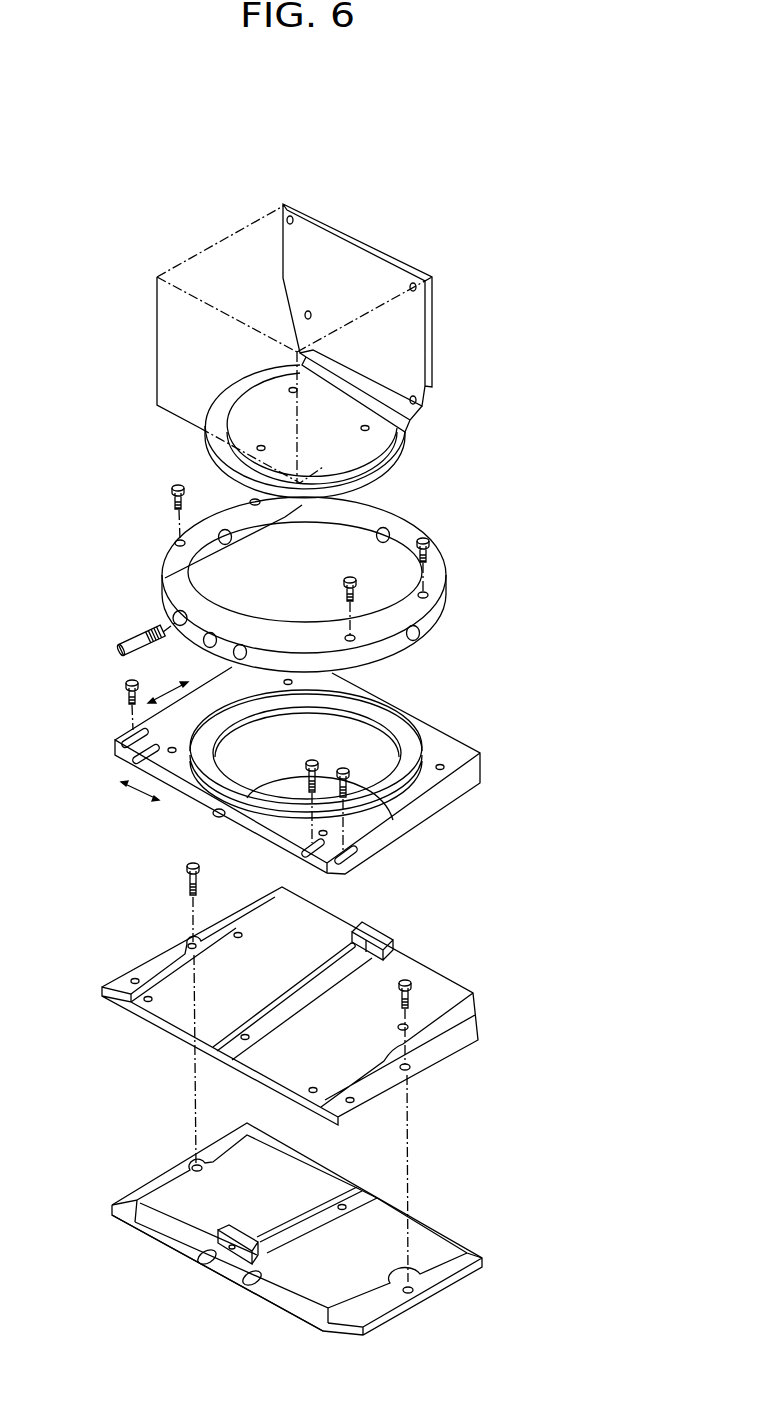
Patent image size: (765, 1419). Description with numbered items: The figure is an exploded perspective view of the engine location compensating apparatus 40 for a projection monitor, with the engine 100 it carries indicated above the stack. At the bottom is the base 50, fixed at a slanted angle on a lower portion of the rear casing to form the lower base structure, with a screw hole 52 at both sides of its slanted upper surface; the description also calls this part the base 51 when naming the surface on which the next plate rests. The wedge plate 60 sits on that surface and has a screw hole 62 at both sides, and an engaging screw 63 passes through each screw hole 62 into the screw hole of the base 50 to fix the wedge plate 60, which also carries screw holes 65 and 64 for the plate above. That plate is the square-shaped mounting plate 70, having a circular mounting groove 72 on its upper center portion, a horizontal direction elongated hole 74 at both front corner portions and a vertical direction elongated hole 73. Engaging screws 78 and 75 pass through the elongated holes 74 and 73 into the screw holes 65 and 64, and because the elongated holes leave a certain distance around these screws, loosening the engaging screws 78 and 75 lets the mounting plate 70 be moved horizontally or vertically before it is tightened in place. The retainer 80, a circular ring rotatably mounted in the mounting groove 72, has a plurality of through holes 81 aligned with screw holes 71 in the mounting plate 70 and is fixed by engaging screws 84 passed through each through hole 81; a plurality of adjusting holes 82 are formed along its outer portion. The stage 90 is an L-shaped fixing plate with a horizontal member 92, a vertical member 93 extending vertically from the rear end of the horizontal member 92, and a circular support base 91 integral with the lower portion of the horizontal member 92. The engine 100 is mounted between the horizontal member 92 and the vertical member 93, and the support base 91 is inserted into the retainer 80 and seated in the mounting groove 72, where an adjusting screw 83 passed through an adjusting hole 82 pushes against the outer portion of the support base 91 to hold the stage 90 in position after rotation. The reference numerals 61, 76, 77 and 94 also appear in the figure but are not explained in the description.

The engine location compensating apparatus 40 is at (52, 195).
The engine 100 is at (213, 242).
The stage 90 is at (446, 324).
The vertical member 93 is at (432, 353).
The flange 94 is at (372, 427).
The horizontal member 92 is at (371, 448).
The support base 91 is at (362, 469).
The retainer 80 is at (447, 546).
The through holes 81 is at (426, 596).
The adjusting holes 82 is at (175, 616).
The adjusting screw 83 is at (118, 640).
The engaging screw 84 is at (172, 490).
The mounting plate 70 is at (460, 728).
The screw holes 71 is at (445, 767).
The mounting groove 72 is at (387, 719).
The vertical direction elongated hole 73 is at (366, 851).
The horizontal direction elongated hole 74 is at (302, 843).
The engaging screw 75 is at (391, 818).
The direction arrow 76 is at (137, 791).
The screw 77 is at (128, 682).
The engaging screw 78 is at (230, 816).
The wedge plate 60 is at (447, 961).
The guide block 61 is at (404, 963).
The screw hole 62 is at (412, 1068).
The engaging screw 63 is at (417, 990).
The screw hole 64 is at (352, 1103).
The screw hole 65 is at (308, 1091).
The base 50 is at (430, 1216).
The base (upper surface) 51 is at (330, 1290).
The screw hole 52 is at (409, 1292).